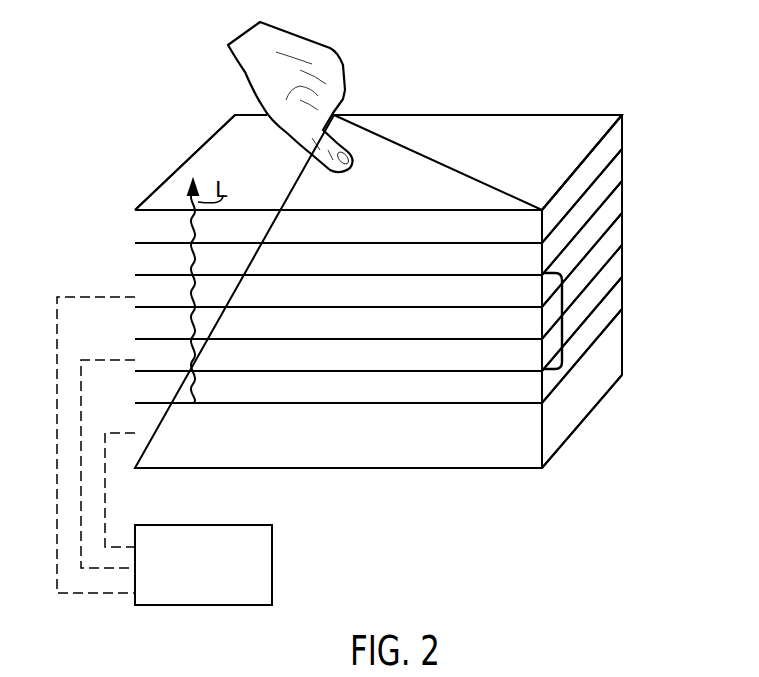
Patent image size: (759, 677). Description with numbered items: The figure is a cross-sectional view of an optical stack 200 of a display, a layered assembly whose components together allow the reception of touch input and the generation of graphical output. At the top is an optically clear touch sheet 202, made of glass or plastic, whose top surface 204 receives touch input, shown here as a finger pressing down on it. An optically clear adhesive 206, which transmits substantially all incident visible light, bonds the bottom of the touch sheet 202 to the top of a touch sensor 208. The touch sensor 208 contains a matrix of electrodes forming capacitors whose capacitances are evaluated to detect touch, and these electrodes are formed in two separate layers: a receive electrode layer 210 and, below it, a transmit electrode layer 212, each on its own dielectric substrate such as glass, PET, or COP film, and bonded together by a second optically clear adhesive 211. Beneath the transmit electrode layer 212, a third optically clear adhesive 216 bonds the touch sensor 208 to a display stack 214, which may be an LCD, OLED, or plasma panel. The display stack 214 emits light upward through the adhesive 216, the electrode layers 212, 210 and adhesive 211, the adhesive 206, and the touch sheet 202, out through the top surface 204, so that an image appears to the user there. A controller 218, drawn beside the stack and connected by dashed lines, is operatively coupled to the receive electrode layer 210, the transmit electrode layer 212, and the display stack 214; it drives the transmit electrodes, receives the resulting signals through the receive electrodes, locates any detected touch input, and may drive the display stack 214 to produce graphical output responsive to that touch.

The optical stack 200 is at (445, 68).
The touch sheet 202 is at (420, 236).
The top surface 204 is at (510, 186).
The optically clear adhesive 206 is at (375, 268).
The touch sensor 208 is at (562, 320).
The receive electrode layer 210 is at (368, 301).
The second optically clear adhesive 211 is at (373, 333).
The transmit electrode layer 212 is at (368, 366).
The display stack 214 is at (425, 445).
The third optically clear adhesive 216 is at (376, 397).
The controller 218 is at (218, 588).